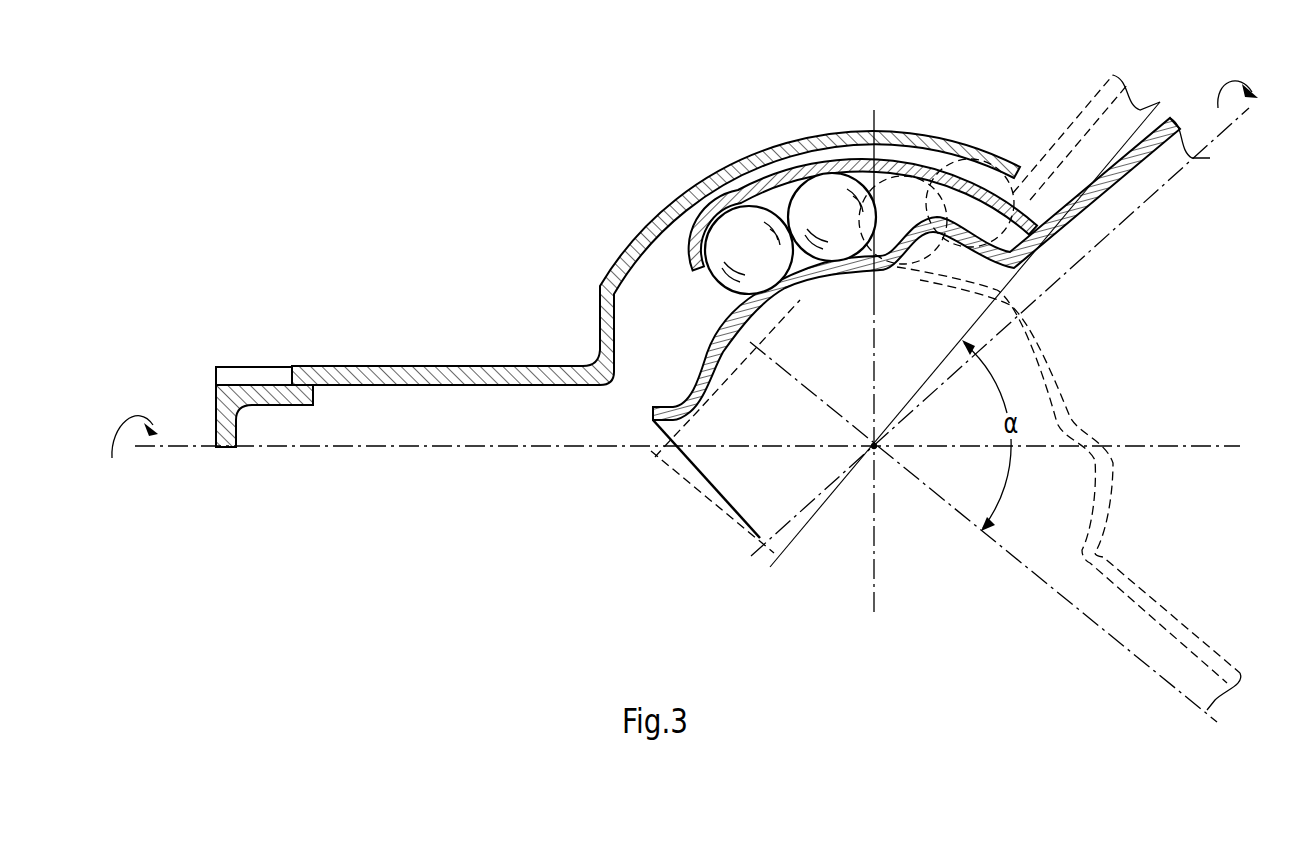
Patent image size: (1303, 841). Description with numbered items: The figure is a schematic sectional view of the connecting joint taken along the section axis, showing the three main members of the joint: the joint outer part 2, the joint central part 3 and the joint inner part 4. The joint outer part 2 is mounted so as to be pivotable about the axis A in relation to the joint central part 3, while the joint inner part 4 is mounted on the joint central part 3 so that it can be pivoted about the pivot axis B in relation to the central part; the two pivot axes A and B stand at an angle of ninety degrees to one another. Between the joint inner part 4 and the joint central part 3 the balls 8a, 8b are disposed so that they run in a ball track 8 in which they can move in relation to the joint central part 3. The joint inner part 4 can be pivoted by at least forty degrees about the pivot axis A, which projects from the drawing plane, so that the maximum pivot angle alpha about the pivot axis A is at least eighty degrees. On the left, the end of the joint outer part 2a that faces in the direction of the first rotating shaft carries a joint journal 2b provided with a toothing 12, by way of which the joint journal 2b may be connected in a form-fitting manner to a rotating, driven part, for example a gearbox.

The joint outer part 2 is at (670, 203).
The end of the joint outer part 2a is at (271, 348).
The joint journal 2b is at (190, 384).
The toothing 12 is at (238, 375).
The joint central part 3 is at (950, 170).
The joint inner part 4 is at (713, 350).
The ball track 8 is at (889, 185).
The ball 8a is at (733, 228).
The ball 8b is at (820, 193).
The pivot axis A is at (874, 446).
The pivot axis B is at (876, 600).